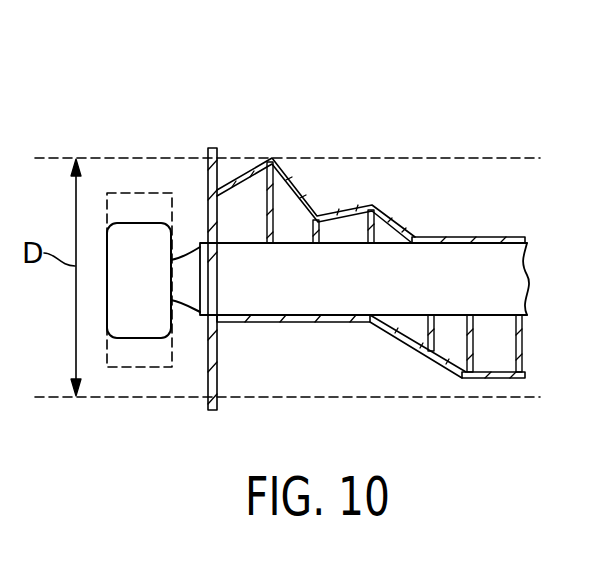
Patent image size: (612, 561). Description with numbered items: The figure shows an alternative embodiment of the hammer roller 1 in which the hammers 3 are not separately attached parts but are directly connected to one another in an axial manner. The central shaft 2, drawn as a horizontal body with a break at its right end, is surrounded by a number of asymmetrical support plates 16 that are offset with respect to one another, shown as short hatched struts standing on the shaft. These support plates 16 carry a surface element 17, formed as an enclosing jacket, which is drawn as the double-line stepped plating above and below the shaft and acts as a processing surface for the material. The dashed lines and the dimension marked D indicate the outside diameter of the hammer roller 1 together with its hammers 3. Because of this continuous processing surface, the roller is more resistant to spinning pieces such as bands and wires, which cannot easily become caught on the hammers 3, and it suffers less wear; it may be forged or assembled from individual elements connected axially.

The hammer roller 1 is at (330, 106).
The shaft 2 is at (480, 292).
The hammers 3 is at (363, 178).
The support plates 16 is at (424, 333).
The surface element 17 is at (393, 218).